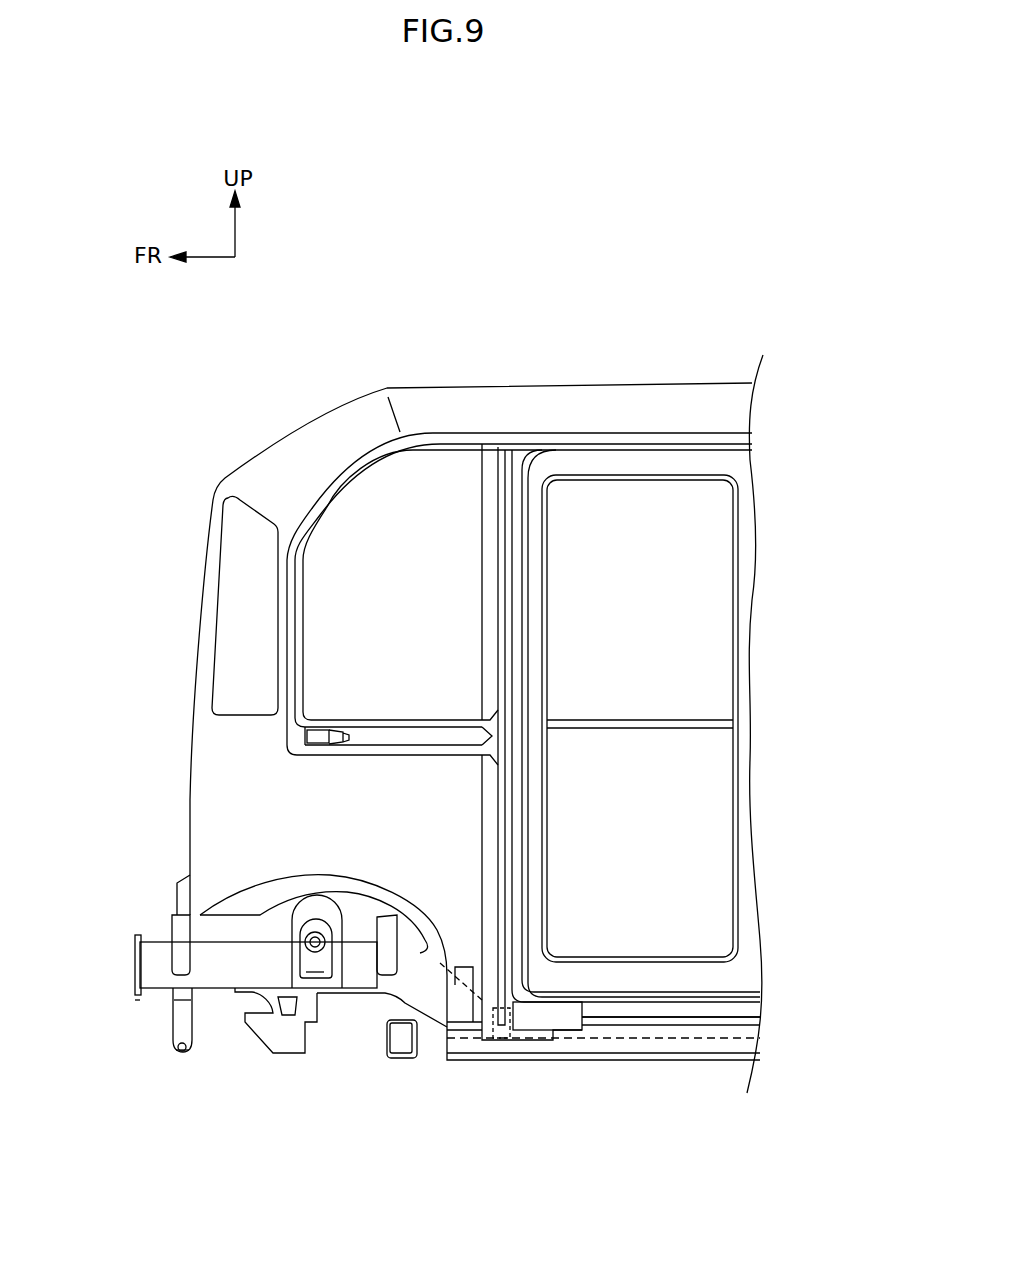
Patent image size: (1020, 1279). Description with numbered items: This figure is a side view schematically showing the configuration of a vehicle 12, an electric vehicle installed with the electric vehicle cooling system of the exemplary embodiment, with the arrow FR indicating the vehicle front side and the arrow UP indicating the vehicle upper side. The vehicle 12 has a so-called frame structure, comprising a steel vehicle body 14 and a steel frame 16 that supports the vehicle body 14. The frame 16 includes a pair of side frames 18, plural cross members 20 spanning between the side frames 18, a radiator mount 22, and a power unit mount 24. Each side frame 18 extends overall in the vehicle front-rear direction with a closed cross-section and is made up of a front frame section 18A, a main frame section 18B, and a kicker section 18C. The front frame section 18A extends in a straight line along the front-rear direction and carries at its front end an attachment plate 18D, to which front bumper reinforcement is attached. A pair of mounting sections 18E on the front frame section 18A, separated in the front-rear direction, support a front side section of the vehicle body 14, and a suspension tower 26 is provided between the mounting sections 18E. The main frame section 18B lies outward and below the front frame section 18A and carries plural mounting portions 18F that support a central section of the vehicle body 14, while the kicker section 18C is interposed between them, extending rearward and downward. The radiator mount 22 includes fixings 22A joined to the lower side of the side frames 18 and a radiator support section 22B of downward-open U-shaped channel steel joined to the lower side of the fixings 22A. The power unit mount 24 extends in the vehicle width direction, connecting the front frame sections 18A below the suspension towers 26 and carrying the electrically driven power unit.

The vehicle 12 is at (637, 322).
The vehicle body 14 is at (730, 408).
The frame 16 is at (120, 1048).
The side frame 18 is at (411, 987).
The front frame section 18A is at (153, 980).
The main frame section 18B is at (627, 1040).
The kicker section 18C is at (437, 1000).
The attachment plate 18D is at (135, 968).
The mounting section 18E is at (185, 958).
The mounting portion 18F is at (517, 1045).
The cross member 20 is at (398, 1043).
The radiator mount 22 is at (187, 998).
The fixing 22A is at (182, 1010).
The radiator support section 22B is at (183, 1053).
The power unit mount 24 is at (285, 1042).
The suspension tower 26 is at (323, 910).